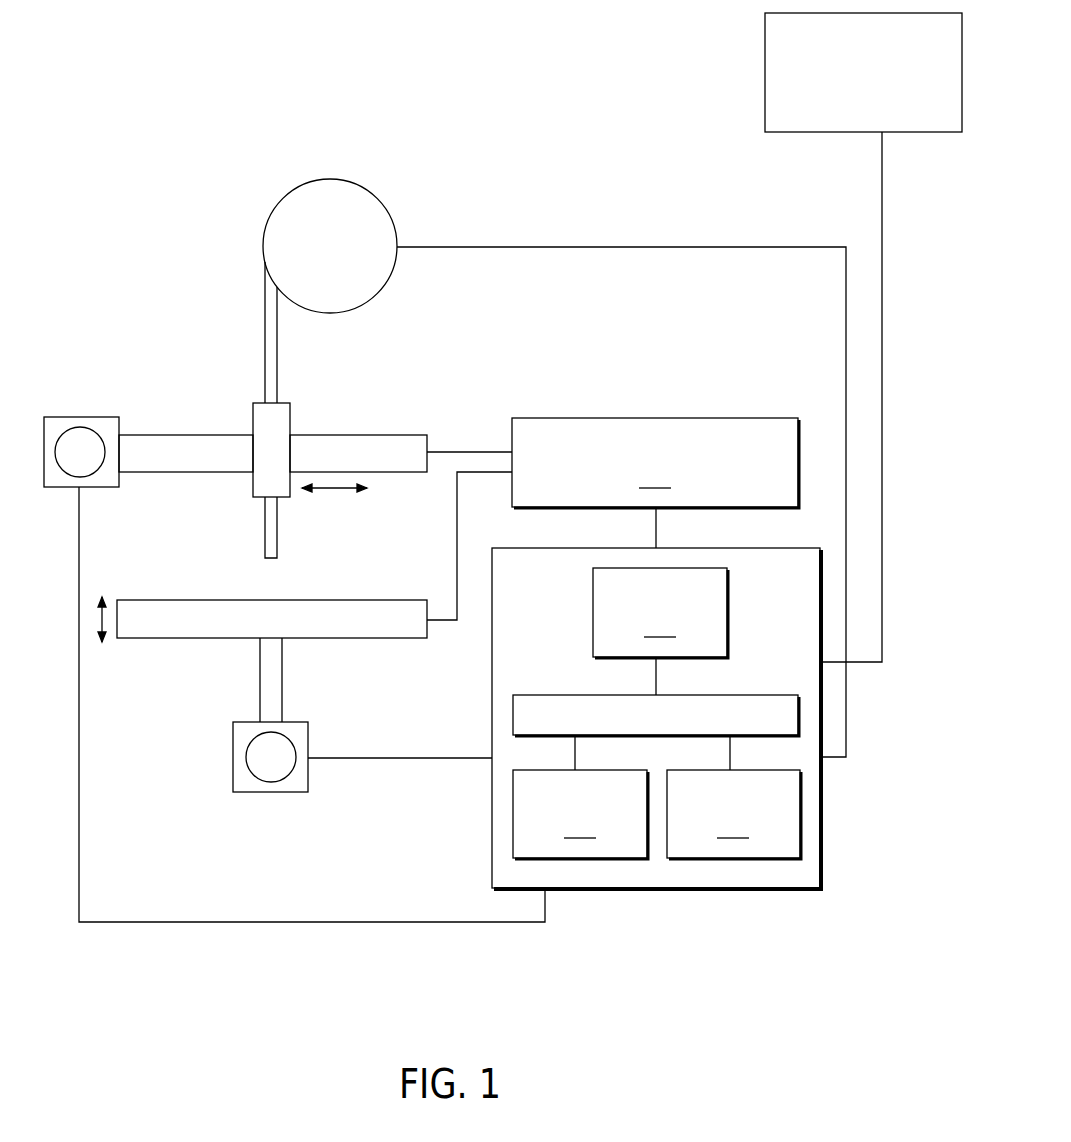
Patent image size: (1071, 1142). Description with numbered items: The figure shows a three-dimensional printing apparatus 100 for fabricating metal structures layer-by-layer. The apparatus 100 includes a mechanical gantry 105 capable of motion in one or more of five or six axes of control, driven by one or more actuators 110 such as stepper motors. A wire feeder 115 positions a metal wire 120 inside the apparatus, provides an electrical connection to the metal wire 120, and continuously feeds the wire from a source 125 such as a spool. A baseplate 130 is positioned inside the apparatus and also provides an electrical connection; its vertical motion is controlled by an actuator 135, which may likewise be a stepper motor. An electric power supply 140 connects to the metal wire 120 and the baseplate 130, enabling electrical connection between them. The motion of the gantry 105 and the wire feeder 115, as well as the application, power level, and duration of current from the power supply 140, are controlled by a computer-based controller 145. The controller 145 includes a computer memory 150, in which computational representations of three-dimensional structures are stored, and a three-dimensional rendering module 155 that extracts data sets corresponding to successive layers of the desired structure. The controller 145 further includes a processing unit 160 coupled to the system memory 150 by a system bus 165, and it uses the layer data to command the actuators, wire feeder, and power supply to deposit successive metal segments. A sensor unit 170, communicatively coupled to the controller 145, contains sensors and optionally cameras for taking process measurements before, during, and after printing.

The apparatus 100 is at (143, 270).
The mechanical gantry 105 is at (393, 435).
The actuator 110 is at (80, 417).
The wire feeder 115 is at (290, 422).
The metal wire 120 is at (277, 525).
The source 125 is at (354, 236).
The baseplate 130 is at (162, 600).
The actuator 135 is at (233, 752).
The electric power supply 140 is at (613, 519).
The controller 145 is at (703, 892).
The computer memory 150 is at (580, 814).
The 3D rendering module 155 is at (734, 814).
The processing unit 160 is at (660, 631).
The system bus 165 is at (545, 695).
The sensor unit 170 is at (863, 337).